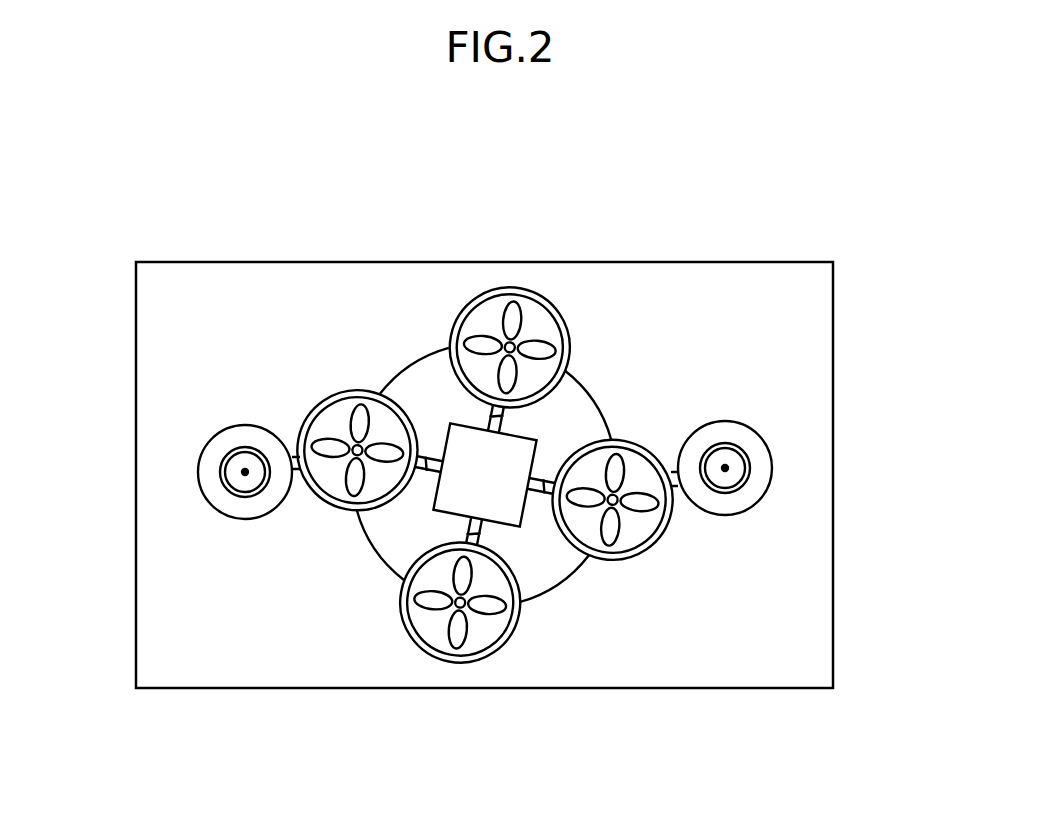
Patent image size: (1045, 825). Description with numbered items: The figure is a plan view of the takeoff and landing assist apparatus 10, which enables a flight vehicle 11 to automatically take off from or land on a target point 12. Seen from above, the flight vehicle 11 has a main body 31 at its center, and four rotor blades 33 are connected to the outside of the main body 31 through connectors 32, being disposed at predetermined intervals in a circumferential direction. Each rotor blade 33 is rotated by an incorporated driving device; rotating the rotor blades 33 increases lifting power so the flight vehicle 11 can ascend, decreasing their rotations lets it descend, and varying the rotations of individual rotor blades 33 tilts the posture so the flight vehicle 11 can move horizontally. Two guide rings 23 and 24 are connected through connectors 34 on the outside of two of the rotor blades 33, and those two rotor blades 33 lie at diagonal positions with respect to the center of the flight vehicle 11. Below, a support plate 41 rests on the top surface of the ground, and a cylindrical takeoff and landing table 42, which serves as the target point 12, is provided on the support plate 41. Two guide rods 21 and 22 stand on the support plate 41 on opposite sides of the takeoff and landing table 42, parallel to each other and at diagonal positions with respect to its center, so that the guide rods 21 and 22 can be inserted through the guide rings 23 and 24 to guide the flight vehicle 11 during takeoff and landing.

The takeoff and landing assist apparatus 10 is at (836, 186).
The flight vehicle 11 is at (580, 380).
The target point 12 is at (359, 526).
The guide rod 21 is at (223, 487).
The guide rod 22 is at (748, 481).
The guide ring 23 is at (203, 445).
The guide ring 24 is at (771, 446).
The main body 31 is at (453, 500).
The connector 32 is at (492, 412).
The rotor blade 33 is at (340, 393).
The connector 34 is at (293, 456).
The support plate 41 is at (833, 666).
The takeoff and landing table 42 is at (552, 560).